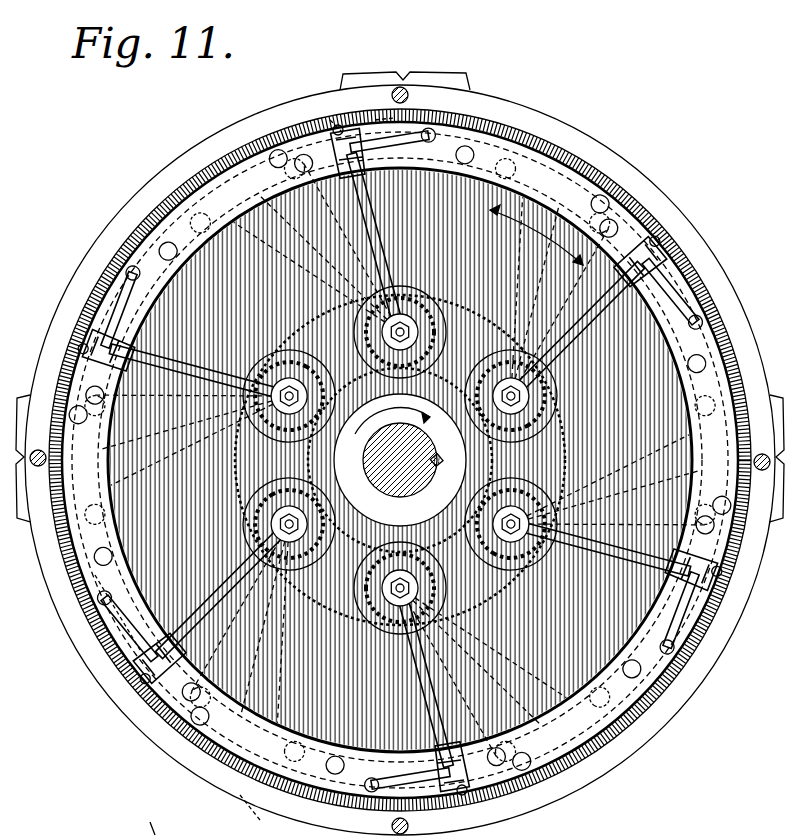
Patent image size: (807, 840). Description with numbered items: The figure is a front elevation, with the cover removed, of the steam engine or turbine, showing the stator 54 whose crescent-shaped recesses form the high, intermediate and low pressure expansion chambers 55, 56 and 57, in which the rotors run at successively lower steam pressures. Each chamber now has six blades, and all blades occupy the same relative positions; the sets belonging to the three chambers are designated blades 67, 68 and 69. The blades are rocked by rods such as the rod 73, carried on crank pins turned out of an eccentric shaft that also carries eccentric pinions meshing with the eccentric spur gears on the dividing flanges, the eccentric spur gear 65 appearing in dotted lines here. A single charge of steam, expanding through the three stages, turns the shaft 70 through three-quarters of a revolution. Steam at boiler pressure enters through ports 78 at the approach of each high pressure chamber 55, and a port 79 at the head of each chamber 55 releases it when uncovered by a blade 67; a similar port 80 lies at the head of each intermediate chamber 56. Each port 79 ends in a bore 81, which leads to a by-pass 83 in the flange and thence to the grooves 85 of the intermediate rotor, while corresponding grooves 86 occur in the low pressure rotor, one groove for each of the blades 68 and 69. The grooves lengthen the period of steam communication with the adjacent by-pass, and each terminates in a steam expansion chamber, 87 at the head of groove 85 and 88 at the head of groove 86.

The stator 54 is at (103, 212).
The high pressure expansion chamber 55 is at (152, 205).
The intermediate pressure expansion chamber 56 is at (238, 140).
The low pressure expansion chamber 57 is at (270, 128).
The eccentric spur gear 65 is at (360, 334).
The blades of the high pressure chambers 67 is at (80, 330).
The blades of the intermediate pressure chambers 68 is at (52, 650).
The blades of the low pressure chambers 69 is at (522, 118).
The shaft 70 is at (427, 476).
The rod 73 is at (378, 252).
The port 78 is at (382, 118).
The port 79 is at (338, 122).
The port 80 is at (253, 817).
The bore 81 is at (149, 831).
The by-pass 83 is at (400, 494).
The groove 85 is at (400, 460).
The groove 86 is at (400, 460).
The steam expansion chamber 87 is at (400, 460).
The steam expansion chamber 88 is at (400, 459).